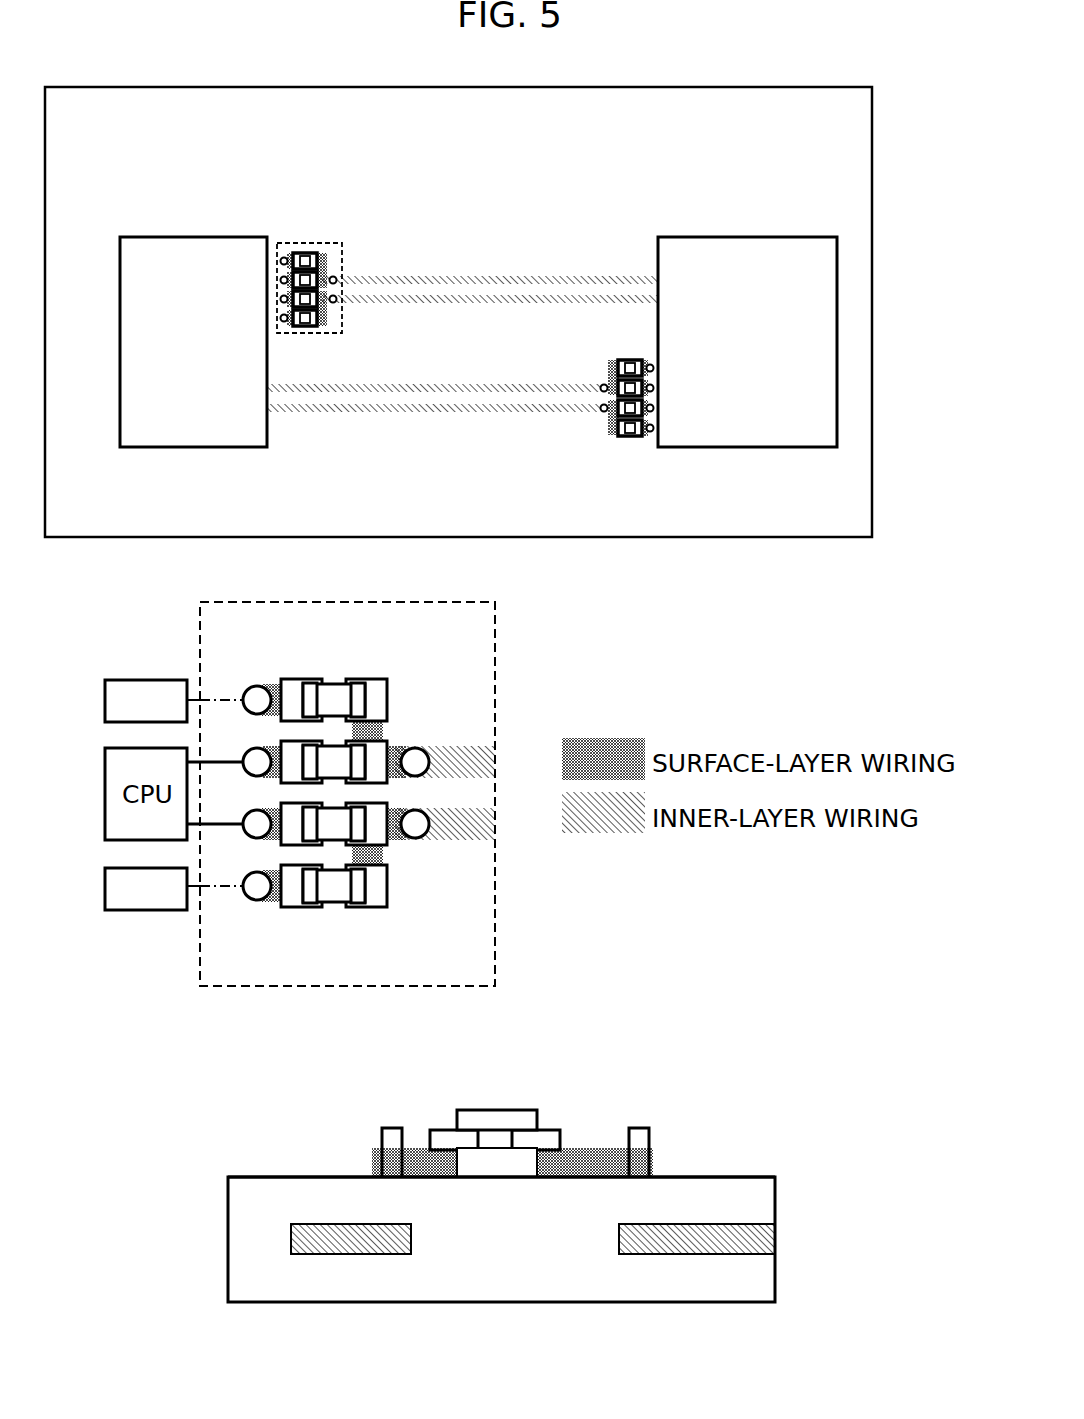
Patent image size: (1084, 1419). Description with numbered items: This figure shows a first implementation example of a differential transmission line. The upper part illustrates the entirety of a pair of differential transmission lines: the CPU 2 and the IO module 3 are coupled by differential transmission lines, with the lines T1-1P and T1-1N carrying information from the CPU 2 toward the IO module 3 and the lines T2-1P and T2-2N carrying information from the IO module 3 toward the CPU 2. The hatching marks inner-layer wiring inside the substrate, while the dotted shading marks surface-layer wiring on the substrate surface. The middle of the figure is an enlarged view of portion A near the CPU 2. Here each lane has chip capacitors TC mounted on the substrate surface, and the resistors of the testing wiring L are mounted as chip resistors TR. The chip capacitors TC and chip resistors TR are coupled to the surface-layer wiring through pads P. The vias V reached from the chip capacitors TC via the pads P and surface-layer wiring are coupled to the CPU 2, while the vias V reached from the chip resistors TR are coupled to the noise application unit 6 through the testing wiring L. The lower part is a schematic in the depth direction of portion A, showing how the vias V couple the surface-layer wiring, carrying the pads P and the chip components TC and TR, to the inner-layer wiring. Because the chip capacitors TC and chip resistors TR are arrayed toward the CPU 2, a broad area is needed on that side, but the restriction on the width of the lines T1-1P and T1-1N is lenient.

The central processing unit (CPU) 2 is at (204, 237).
The input/output (IO) module 3 is at (743, 237).
The noise application unit 6 is at (146, 795).
The portion A is at (303, 242).
The differential transmission line T1-1P is at (435, 256).
The differential transmission line T1-1N is at (402, 302).
The differential transmission line T2-1P is at (533, 363).
The differential transmission line T2-2N is at (502, 412).
The testing wiring L is at (235, 693).
The via V is at (262, 687).
The chip resistor TR is at (338, 683).
The pad P is at (382, 679).
The chip capacitor TC is at (342, 745).